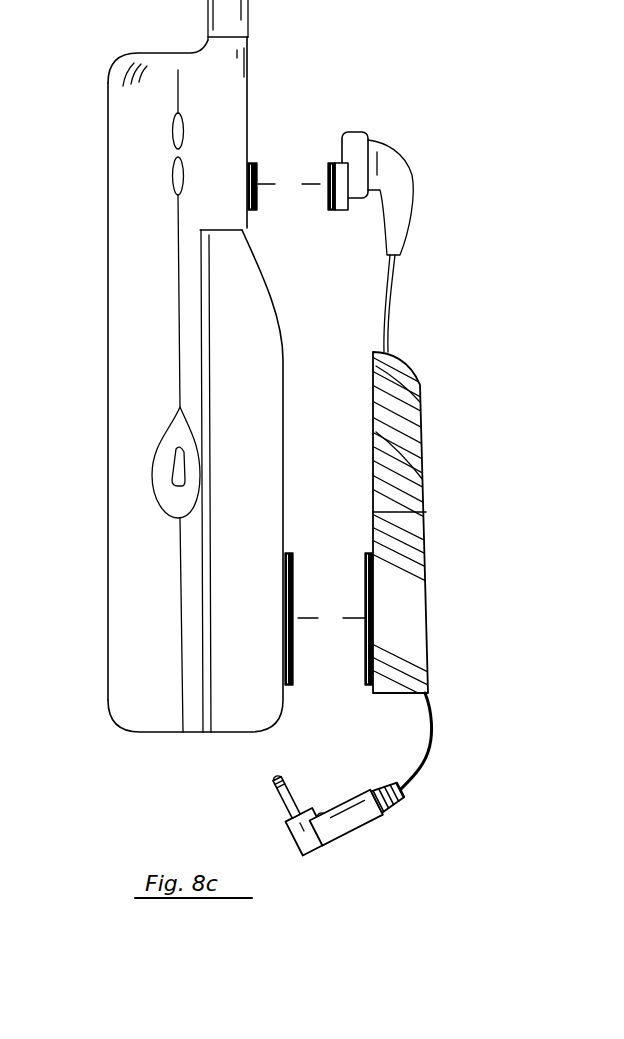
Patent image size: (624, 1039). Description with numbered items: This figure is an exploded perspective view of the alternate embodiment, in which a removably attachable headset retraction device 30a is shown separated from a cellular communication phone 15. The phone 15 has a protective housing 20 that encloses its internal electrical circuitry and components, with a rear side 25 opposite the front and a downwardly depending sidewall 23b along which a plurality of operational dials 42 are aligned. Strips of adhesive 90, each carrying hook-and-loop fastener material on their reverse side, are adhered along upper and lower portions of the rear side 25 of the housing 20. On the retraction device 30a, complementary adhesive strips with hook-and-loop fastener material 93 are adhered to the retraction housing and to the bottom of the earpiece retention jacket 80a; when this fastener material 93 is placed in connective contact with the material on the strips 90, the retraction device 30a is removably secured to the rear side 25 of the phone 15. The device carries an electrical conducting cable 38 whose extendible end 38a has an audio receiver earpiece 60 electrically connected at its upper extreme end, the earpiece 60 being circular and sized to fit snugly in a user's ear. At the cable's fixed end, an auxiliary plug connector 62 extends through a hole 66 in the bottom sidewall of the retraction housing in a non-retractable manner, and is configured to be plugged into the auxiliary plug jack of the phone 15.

The cellular communication phone 15 is at (92, 78).
The protective housing 20 is at (162, 68).
The operational dials 42 is at (172, 175).
The strips of adhesive 90 is at (252, 162).
The audio receiver earpiece 60 is at (358, 130).
The removably attachable headset retraction device 30a is at (437, 120).
The hook-and-loop fastener material 93 is at (331, 212).
The earpiece retention jacket 80a is at (347, 212).
The extendible end 38a is at (396, 266).
The electrical conducting cable 38 is at (392, 330).
The downwardly depending sidewall 23b is at (137, 333).
The rear side 25 is at (108, 390).
The hole 66 is at (428, 695).
The auxiliary plug connector 62 is at (306, 853).